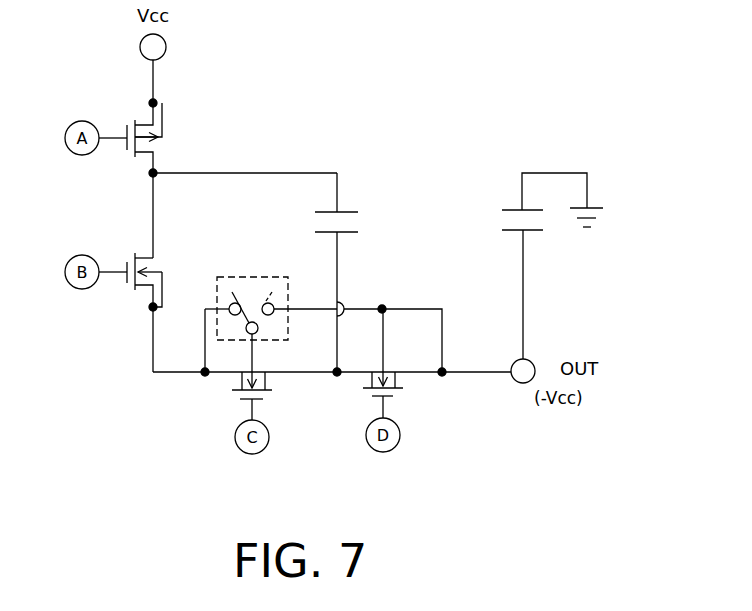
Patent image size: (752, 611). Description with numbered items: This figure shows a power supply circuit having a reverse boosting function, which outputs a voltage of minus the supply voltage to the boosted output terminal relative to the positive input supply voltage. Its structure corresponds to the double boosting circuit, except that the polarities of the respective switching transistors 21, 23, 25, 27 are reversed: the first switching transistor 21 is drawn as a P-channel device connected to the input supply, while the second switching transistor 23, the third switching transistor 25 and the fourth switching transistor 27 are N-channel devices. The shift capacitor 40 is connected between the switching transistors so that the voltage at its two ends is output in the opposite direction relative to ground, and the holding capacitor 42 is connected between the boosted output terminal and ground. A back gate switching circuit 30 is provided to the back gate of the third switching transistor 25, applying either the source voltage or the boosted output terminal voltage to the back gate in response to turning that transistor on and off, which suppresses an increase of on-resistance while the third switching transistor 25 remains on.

The switching transistor 21 is at (118, 107).
The switching transistor 23 is at (117, 328).
The third switching transistor 25 is at (212, 418).
The switching transistor 27 is at (341, 420).
The back gate switching circuit 30 is at (256, 276).
The shift capacitor 40 is at (373, 219).
The holding capacitor 42 is at (555, 229).